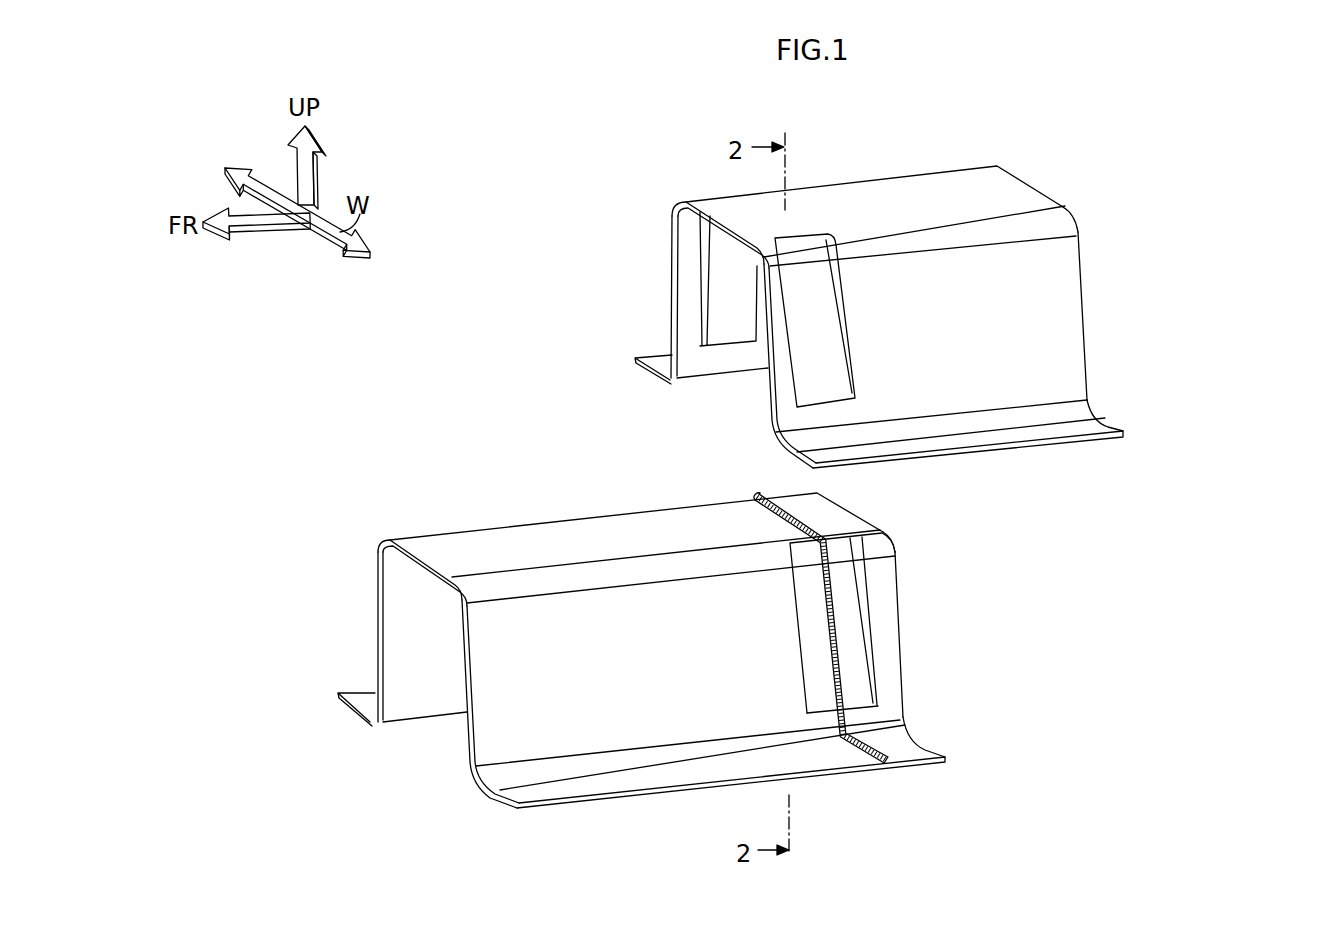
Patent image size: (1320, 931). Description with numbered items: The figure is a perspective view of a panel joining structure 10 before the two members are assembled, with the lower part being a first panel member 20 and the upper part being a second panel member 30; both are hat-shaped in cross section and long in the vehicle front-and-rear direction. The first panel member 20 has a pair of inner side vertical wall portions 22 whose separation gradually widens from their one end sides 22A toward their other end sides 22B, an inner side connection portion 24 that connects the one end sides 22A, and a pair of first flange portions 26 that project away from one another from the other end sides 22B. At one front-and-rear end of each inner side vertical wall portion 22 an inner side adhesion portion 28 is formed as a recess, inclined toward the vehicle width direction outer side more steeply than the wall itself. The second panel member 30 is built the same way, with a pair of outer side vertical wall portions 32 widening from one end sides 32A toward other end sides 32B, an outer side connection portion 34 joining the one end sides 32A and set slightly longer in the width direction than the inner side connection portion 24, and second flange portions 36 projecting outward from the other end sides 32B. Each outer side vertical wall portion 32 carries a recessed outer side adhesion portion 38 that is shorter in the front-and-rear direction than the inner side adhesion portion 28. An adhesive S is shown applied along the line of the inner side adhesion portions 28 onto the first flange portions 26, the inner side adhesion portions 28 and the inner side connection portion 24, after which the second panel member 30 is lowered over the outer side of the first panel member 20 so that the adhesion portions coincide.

The panel joining structure 10 is at (1228, 160).
The first panel member 20 is at (357, 455).
The inner side vertical wall portions 22 is at (473, 757).
The one end sides 22A is at (468, 594).
The other end sides 22B is at (494, 775).
The inner side connection portion 24 is at (528, 535).
The first flange portions 26 is at (355, 697).
The inner side adhesion portion 28 is at (855, 548).
The second panel member 30 is at (1026, 137).
The outer side vertical wall portions 32 is at (785, 413).
The one end sides 32A is at (1033, 218).
The other end sides 32B is at (1077, 407).
The outer side connection portion 34 is at (842, 195).
The second flange portions 36 is at (658, 358).
The outer side adhesion portion 38 is at (822, 278).
The adhesive S is at (843, 635).